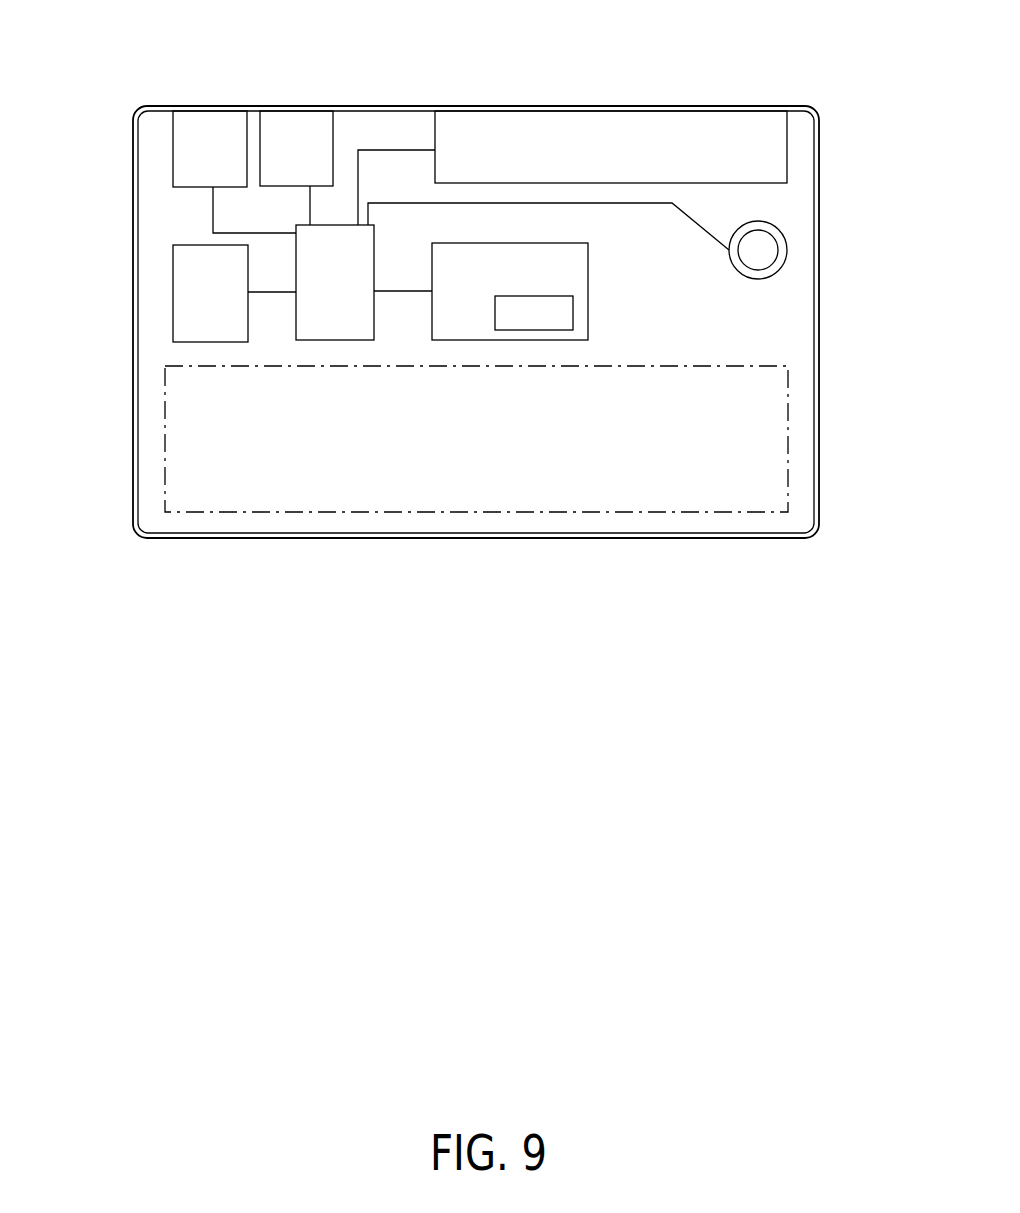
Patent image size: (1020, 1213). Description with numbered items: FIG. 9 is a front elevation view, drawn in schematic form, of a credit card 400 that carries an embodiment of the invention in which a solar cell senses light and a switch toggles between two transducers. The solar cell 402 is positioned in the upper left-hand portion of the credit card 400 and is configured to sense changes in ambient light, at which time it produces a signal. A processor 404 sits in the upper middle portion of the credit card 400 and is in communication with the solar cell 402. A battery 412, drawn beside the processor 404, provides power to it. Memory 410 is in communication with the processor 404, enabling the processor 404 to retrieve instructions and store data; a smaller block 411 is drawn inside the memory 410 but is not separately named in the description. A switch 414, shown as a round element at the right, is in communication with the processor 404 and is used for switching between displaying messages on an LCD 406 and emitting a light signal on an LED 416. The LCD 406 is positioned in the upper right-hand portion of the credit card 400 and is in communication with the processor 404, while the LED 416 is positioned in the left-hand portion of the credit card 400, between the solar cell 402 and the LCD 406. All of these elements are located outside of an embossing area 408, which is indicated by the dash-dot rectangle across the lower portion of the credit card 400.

The credit card 400 is at (500, 46).
The solar cell 402 is at (173, 148).
The processor 404 is at (335, 340).
The LCD 406 is at (787, 148).
The embossing area 408 is at (690, 362).
The memory 410 is at (588, 291).
The memory sub-block 411 is at (573, 313).
The battery 412 is at (173, 293).
The switch 414 is at (788, 250).
The LED 416 is at (297, 107).